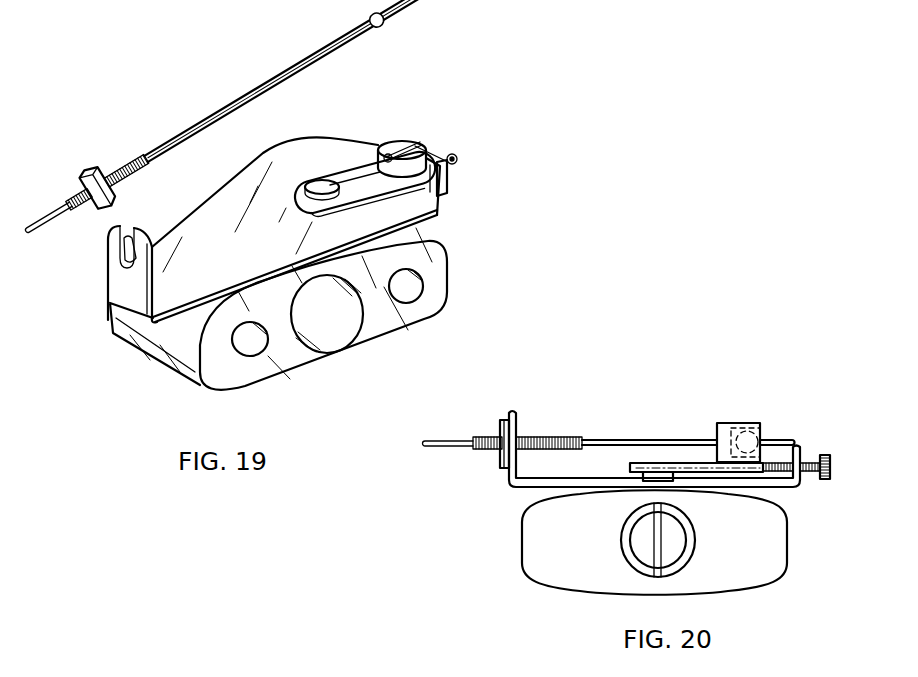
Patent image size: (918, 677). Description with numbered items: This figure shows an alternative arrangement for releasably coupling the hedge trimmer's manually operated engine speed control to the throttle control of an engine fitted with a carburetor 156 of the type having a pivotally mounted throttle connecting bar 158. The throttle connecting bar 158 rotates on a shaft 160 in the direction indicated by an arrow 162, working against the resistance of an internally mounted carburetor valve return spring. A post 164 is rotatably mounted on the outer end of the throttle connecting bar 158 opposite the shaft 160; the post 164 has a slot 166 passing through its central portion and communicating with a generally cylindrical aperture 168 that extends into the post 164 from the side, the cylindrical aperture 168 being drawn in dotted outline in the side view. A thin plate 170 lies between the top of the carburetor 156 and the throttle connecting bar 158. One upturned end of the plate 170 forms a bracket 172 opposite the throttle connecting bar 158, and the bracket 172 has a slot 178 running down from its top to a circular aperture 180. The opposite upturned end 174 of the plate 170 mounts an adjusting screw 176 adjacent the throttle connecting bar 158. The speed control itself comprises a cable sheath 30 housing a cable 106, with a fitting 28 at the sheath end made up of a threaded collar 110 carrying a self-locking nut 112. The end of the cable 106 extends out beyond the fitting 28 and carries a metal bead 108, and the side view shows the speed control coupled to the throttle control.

In FIG. 19, the fitting 28 is at (118, 194).
In FIG. 20, the fitting 28 is at (553, 434).
In FIG. 19, the cable sheath 30 is at (48, 212).
In FIG. 20, the cable sheath 30 is at (444, 447).
In FIG. 19, the cable 106 is at (280, 86).
In FIG. 20, the cable 106 is at (633, 440).
In FIG. 19, the metal bead 108 is at (385, 25).
In FIG. 20, the metal bead 108 is at (757, 428).
In FIG. 19, the threaded collar 110 is at (120, 160).
In FIG. 20, the threaded collar 110 is at (490, 450).
In FIG. 19, the self-locking nut 112 is at (84, 170).
In FIG. 20, the self-locking nut 112 is at (504, 419).
In FIG. 19, the carburetor 156 is at (178, 360).
In FIG. 20, the carburetor 156 is at (778, 552).
In FIG. 19, the throttle connecting bar 158 is at (348, 170).
In FIG. 20, the throttle connecting bar 158 is at (677, 462).
In FIG. 19, the shaft 160 is at (312, 178).
In FIG. 20, the shaft 160 is at (652, 462).
In FIG. 19, the arrow 162 is at (437, 218).
In FIG. 19, the post 164 is at (433, 184).
In FIG. 20, the post 164 is at (727, 423).
In FIG. 19, the slot 166 is at (413, 141).
In FIG. 19, the cylindrical aperture 168 is at (430, 153).
In FIG. 20, the cylindrical aperture 168 is at (772, 482).
In FIG. 19, the thin plate 170 is at (200, 218).
In FIG. 20, the thin plate 170 is at (530, 488).
In FIG. 19, the bracket 172 is at (113, 286).
In FIG. 20, the bracket 172 is at (511, 480).
In FIG. 19, the upturned end 174 is at (434, 158).
In FIG. 20, the upturned end 174 is at (800, 448).
In FIG. 19, the adjusting screw 176 is at (458, 160).
In FIG. 20, the adjusting screw 176 is at (831, 470).
In FIG. 19, the slot 178 is at (118, 241).
In FIG. 19, the circular aperture 180 is at (124, 264).